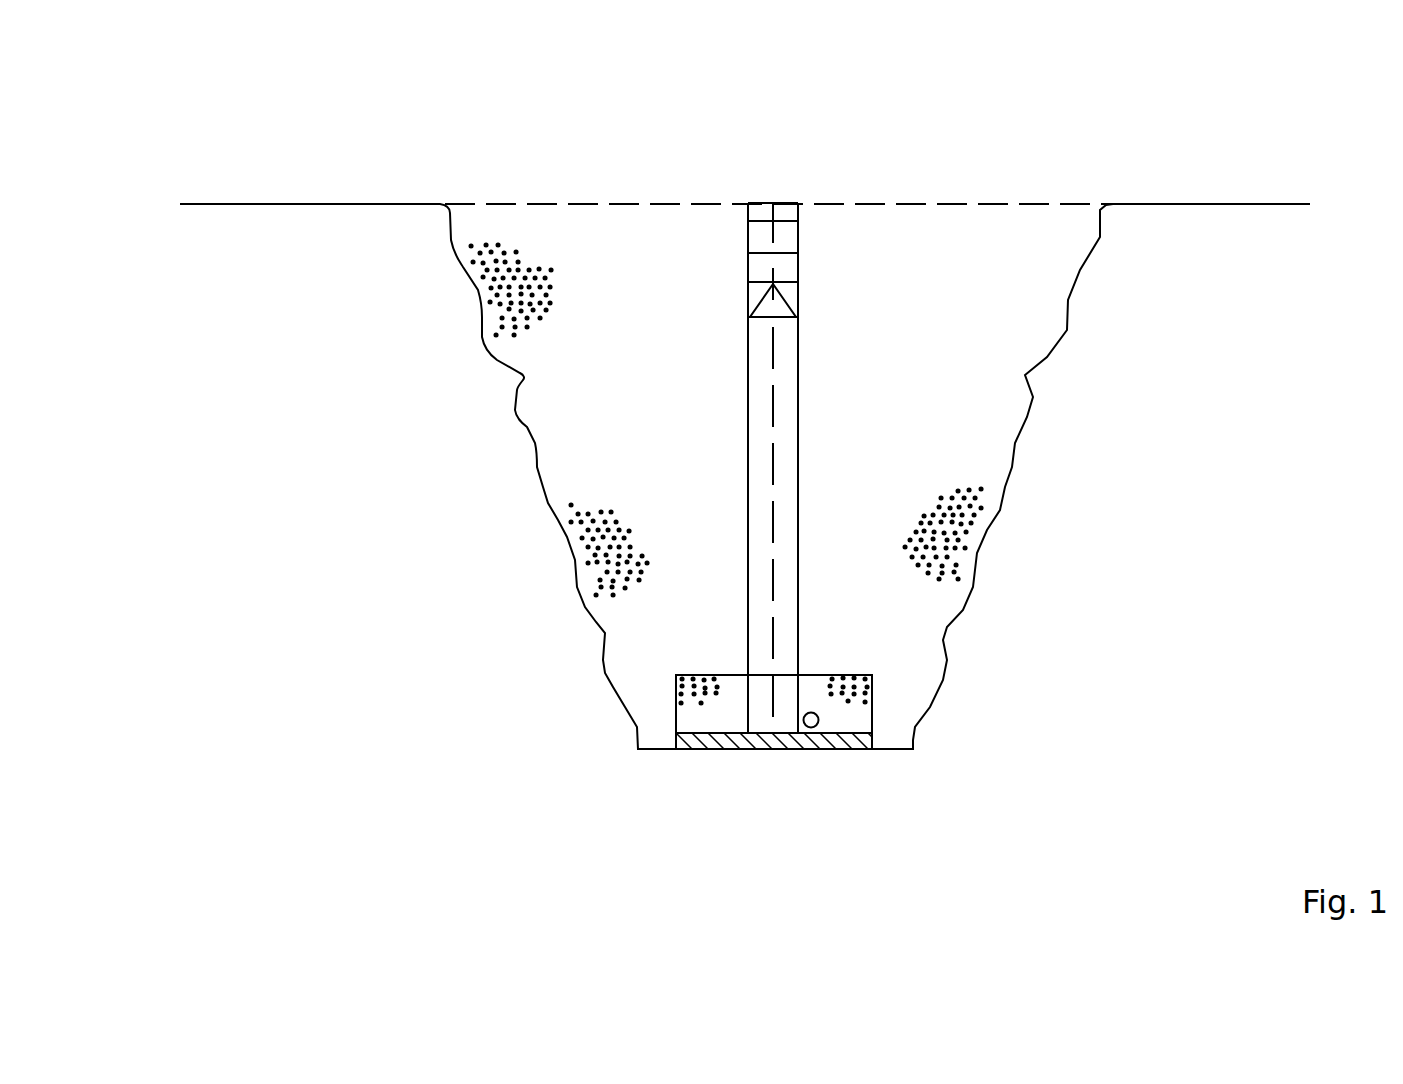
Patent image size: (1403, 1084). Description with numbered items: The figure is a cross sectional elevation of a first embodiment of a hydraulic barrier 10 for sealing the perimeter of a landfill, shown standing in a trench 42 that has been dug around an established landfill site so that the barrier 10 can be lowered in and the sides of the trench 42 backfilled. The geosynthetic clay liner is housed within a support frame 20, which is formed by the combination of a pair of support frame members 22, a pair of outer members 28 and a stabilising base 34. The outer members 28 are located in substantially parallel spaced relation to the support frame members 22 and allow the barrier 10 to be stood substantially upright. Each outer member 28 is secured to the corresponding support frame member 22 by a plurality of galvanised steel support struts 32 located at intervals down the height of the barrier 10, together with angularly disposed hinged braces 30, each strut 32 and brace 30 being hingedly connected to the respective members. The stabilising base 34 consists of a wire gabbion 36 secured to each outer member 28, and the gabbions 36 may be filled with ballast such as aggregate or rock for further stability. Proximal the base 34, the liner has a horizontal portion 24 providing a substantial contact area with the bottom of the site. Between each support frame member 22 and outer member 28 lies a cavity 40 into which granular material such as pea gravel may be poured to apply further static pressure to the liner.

The hydraulic barrier 10 is at (756, 451).
The support frame 20 is at (773, 484).
The support frame member 22 is at (773, 403).
The horizontal portion 24 is at (797, 748).
The outer member 28 is at (748, 422).
The hinged brace 30 is at (760, 299).
The support strut 32 is at (755, 222).
The stabilising base 34 is at (696, 795).
The wire gabbion 36 is at (728, 677).
The cavity 40 is at (770, 430).
The trench 42 is at (947, 218).